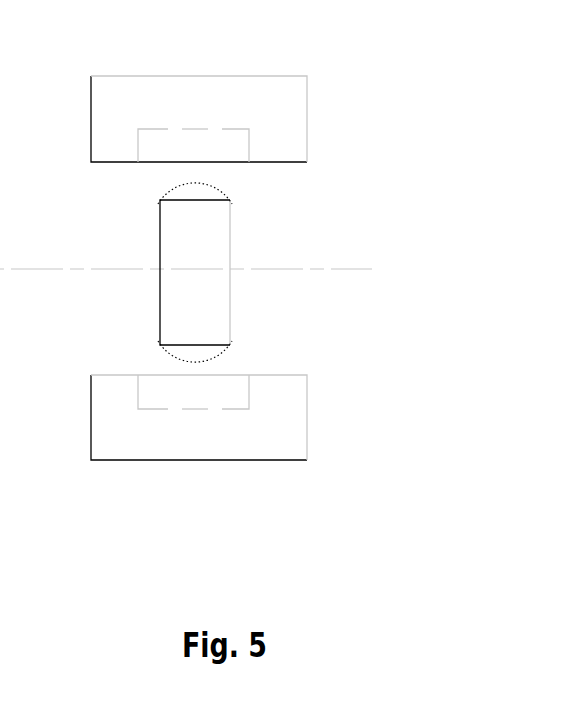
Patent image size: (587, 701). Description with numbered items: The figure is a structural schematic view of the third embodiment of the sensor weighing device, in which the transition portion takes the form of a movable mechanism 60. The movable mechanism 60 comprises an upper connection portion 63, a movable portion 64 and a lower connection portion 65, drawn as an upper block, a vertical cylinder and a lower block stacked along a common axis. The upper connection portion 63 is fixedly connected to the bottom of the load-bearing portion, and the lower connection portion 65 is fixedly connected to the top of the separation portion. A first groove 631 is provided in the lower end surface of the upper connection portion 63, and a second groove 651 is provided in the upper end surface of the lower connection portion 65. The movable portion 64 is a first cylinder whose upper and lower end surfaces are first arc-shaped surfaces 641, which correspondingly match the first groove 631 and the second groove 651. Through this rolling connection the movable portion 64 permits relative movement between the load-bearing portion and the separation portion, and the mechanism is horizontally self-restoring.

The movable mechanism 60 is at (494, 67).
The upper connection portion 63 is at (232, 81).
The first groove 631 is at (203, 125).
The movable portion 64 is at (247, 256).
The first arc-shaped surfaces 641 is at (205, 191).
The lower connection portion 65 is at (234, 460).
The second groove 651 is at (173, 408).